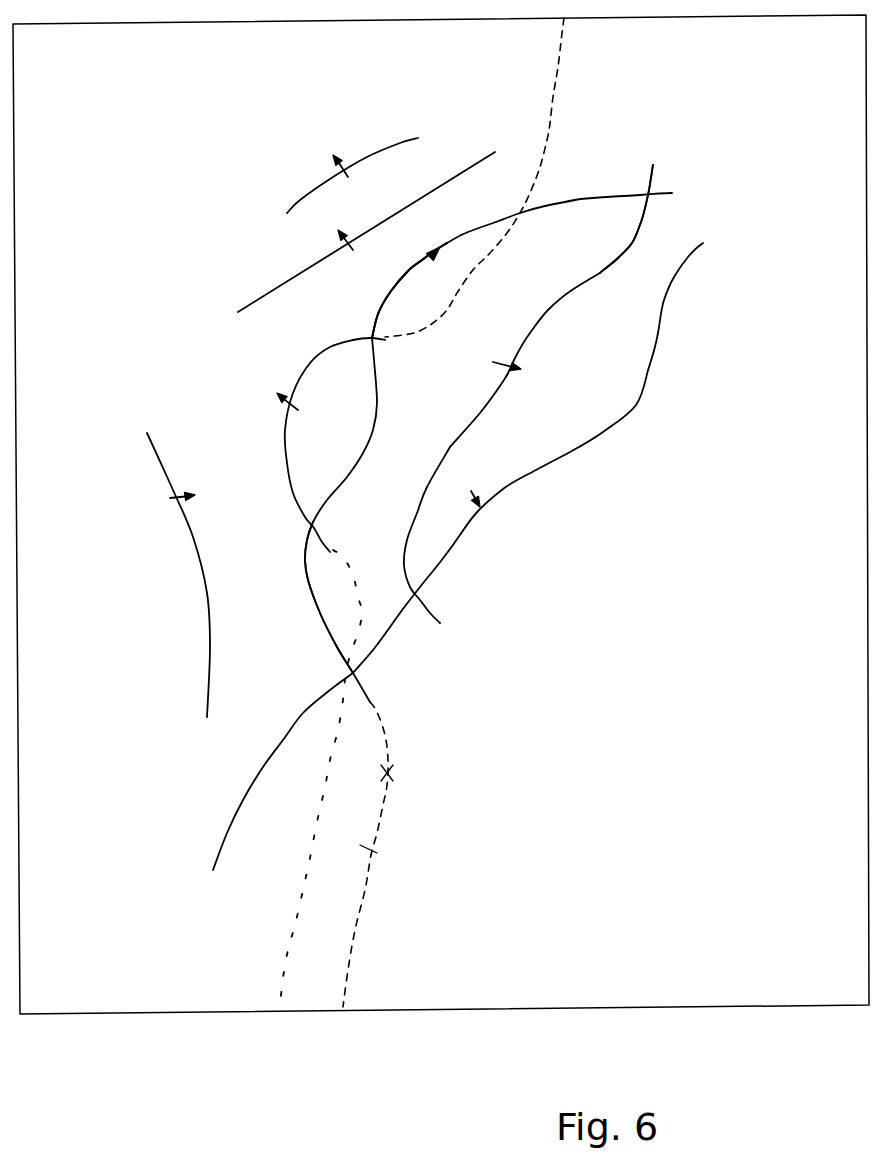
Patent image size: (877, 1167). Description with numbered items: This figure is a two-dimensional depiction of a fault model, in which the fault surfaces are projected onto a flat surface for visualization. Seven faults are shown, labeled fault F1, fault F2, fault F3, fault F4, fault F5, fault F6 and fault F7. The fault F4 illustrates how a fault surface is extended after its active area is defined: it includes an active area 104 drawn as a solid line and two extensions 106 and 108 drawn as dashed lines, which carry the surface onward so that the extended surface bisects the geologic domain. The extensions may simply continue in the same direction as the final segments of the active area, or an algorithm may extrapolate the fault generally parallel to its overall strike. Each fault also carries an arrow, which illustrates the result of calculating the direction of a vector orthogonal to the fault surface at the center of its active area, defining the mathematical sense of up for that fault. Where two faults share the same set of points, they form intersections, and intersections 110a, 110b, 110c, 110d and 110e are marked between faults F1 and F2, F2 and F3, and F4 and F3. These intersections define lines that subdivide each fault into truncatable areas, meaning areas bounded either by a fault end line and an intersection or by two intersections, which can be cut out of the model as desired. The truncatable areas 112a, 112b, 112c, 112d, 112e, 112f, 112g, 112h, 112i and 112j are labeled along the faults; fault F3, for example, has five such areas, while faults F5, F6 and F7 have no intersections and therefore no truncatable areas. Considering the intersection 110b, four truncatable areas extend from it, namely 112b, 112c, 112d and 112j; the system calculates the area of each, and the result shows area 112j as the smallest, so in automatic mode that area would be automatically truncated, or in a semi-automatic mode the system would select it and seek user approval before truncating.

The active area 104 is at (283, 453).
The extension 106 is at (557, 62).
The extension 108 is at (283, 943).
The intersection 110a is at (365, 673).
The intersection 110b is at (415, 612).
The intersection 110c is at (323, 530).
The intersection 110d is at (383, 344).
The intersection 110e is at (658, 199).
The truncatable area 112a is at (267, 740).
The truncatable area 112b is at (393, 627).
The truncatable area 112c is at (667, 310).
The truncatable area 112d is at (448, 447).
The truncatable area 112e is at (632, 190).
The truncatable area 112f is at (626, 219).
The truncatable area 112g is at (393, 327).
The truncatable area 112h is at (410, 279).
The truncatable area 112i is at (409, 290).
The truncatable area 112j is at (437, 607).
The fault F1 is at (643, 410).
The fault F2 is at (573, 293).
The fault F3 is at (567, 203).
The fault F4 is at (293, 373).
The fault F5 is at (187, 557).
The fault F6 is at (251, 297).
The fault F7 is at (387, 133).